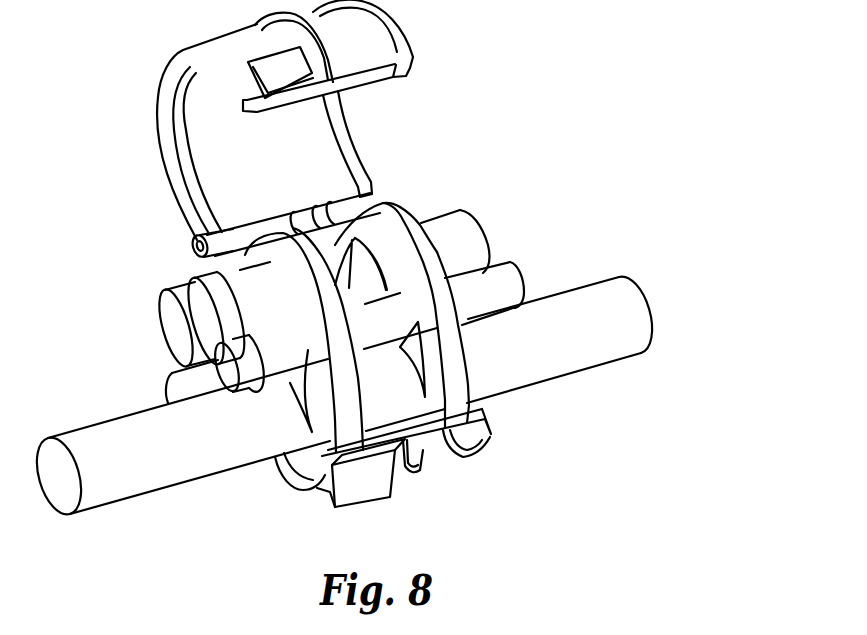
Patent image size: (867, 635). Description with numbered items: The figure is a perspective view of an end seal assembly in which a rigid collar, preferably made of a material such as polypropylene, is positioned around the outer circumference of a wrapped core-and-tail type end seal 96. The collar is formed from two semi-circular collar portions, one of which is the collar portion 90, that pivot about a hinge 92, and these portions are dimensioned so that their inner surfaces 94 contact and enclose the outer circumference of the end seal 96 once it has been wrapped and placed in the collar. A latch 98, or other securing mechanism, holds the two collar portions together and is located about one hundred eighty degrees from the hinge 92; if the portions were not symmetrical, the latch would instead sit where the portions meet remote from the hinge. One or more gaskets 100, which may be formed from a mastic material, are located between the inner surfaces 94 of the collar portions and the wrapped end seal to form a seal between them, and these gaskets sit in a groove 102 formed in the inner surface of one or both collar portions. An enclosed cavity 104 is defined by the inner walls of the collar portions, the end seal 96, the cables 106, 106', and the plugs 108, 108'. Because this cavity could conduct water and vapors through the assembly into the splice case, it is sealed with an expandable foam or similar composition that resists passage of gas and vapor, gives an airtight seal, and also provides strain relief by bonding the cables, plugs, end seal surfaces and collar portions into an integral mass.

The semi-circular collar portion 90 is at (283, 120).
The hinge 92 is at (192, 248).
The inner surface 94 is at (205, 137).
The core-and-tail type end seal 96 is at (470, 355).
The latch 98 is at (372, 493).
The gasket 100 is at (327, 213).
The groove 102 is at (329, 170).
The enclosed cavity 104 is at (368, 242).
The cable 106 is at (364, 387).
The cable 106' is at (185, 369).
The plug 108 is at (201, 312).
The plug 108' is at (472, 267).